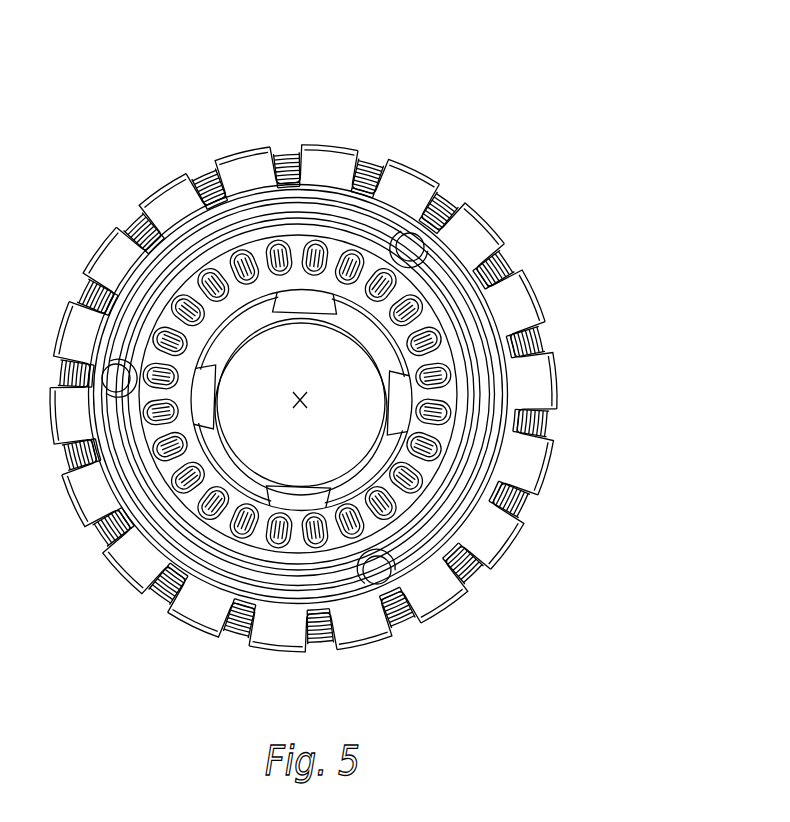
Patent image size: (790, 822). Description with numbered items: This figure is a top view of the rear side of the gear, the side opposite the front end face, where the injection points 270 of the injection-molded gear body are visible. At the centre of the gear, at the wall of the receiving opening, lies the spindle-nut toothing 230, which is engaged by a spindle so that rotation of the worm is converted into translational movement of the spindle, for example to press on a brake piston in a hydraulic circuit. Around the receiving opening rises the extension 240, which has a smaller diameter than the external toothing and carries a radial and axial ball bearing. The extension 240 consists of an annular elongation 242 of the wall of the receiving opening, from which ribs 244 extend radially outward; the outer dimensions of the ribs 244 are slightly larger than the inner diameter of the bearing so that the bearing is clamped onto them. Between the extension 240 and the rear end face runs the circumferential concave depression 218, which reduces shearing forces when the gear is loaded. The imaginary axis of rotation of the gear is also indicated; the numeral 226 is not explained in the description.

The circumferential concave depression 218 is at (340, 233).
The central bore 226 is at (328, 412).
The spindle-nut toothing 230 is at (250, 320).
The extension 240 is at (222, 480).
The annular elongation 242 is at (398, 340).
The ribs 244 is at (230, 523).
The injection points 270 is at (416, 242).